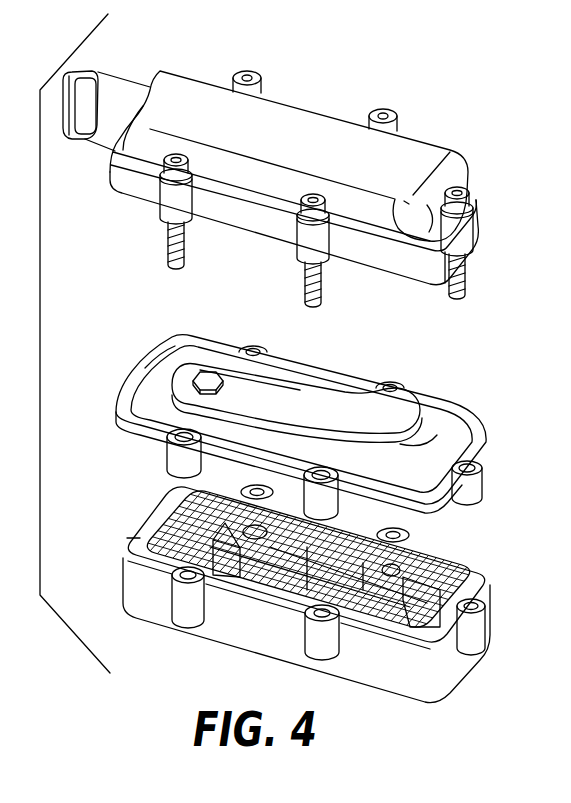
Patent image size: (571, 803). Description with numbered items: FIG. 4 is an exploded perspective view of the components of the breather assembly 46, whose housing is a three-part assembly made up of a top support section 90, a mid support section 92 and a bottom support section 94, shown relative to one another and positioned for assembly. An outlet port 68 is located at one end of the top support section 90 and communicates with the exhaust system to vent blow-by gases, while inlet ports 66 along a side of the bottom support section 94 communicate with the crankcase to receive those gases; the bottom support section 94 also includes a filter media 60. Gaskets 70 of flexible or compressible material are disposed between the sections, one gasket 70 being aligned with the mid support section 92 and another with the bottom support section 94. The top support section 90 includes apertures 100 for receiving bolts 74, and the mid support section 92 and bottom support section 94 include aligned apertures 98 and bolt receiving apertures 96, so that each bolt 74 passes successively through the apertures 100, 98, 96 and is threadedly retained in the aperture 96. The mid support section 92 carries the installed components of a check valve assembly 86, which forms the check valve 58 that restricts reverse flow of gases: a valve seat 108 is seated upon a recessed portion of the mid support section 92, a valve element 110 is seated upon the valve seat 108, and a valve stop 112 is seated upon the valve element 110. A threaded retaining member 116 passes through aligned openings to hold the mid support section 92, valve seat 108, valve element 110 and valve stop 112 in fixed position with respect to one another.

The breather assembly 46 is at (42, 292).
The check valve 58 is at (290, 398).
The filter media 60 is at (443, 567).
The inlet ports 66 is at (278, 553).
The outlet port 68 is at (68, 70).
The gaskets 70 is at (145, 368).
The bolts 74 is at (472, 193).
The check valve assembly 86 is at (503, 493).
The top support section 90 is at (282, 112).
The mid support section 92 is at (123, 427).
The bottom support section 94 is at (143, 613).
The bolt receiving apertures 96 is at (332, 645).
The apertures 98 is at (177, 460).
The apertures 100 is at (168, 203).
The valve seat 108 is at (427, 444).
The valve element 110 is at (410, 443).
The valve stop 112 is at (353, 403).
The retaining member 116 is at (213, 372).